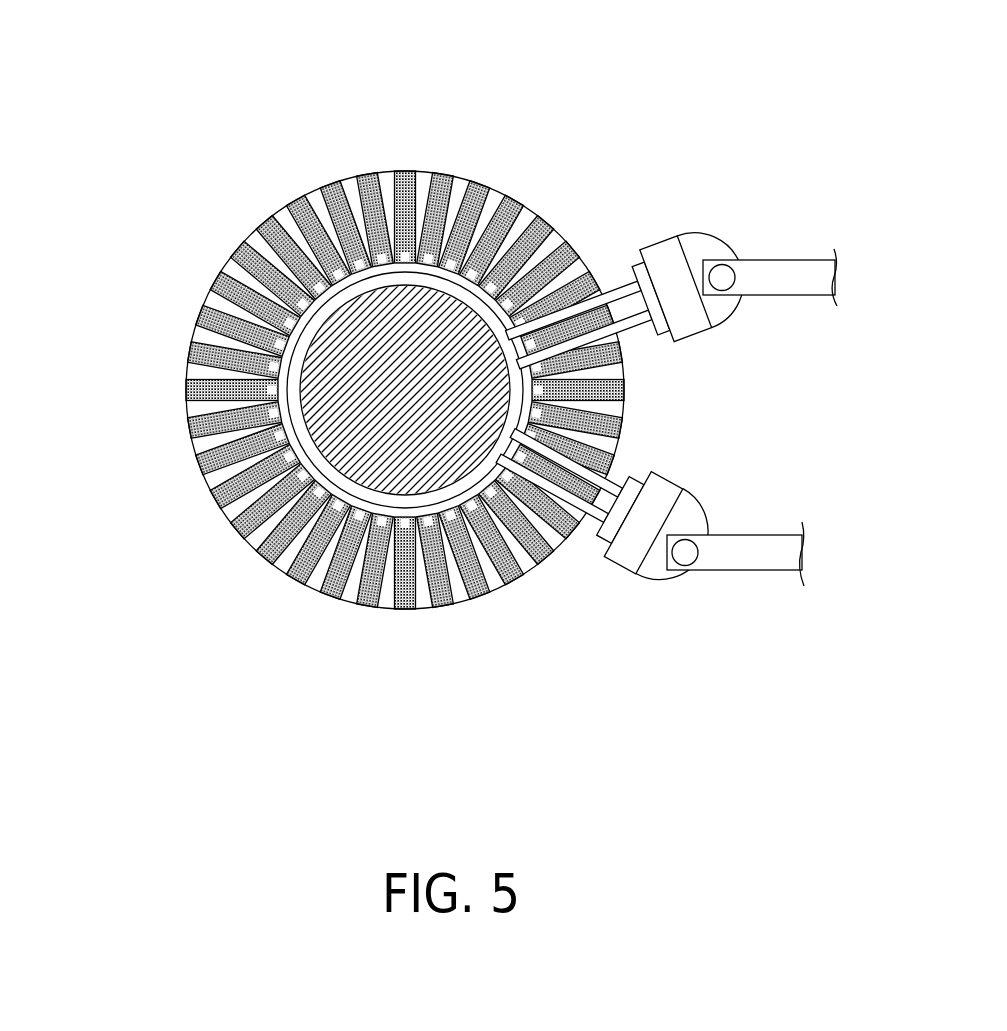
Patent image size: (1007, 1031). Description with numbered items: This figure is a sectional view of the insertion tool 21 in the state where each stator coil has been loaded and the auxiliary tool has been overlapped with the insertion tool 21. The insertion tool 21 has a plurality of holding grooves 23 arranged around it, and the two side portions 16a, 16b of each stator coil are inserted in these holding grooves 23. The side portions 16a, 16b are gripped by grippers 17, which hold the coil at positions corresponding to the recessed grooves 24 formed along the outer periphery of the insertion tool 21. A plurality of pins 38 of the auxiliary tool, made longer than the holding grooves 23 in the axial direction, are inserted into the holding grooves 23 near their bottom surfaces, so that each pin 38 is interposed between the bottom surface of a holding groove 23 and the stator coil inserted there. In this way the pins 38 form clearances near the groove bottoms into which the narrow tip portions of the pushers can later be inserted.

The side portion of the stator coil 16a is at (328, 182).
The side portion of the stator coil 16b is at (383, 183).
The gripper 17 is at (615, 290).
The insertion tool 21 is at (186, 451).
The holding groove 23 is at (213, 288).
The recessed groove 24 is at (310, 460).
The pin 38 is at (388, 575).